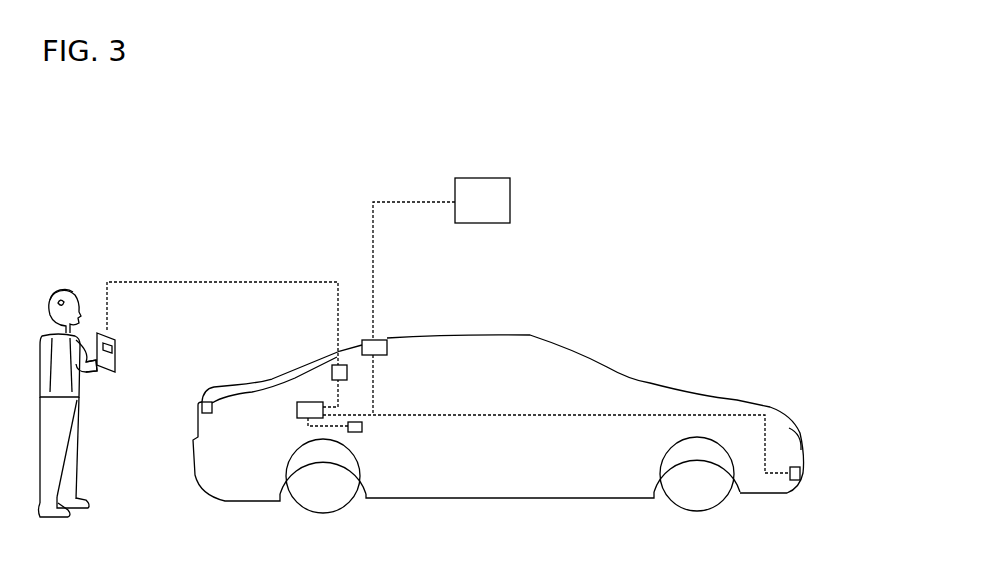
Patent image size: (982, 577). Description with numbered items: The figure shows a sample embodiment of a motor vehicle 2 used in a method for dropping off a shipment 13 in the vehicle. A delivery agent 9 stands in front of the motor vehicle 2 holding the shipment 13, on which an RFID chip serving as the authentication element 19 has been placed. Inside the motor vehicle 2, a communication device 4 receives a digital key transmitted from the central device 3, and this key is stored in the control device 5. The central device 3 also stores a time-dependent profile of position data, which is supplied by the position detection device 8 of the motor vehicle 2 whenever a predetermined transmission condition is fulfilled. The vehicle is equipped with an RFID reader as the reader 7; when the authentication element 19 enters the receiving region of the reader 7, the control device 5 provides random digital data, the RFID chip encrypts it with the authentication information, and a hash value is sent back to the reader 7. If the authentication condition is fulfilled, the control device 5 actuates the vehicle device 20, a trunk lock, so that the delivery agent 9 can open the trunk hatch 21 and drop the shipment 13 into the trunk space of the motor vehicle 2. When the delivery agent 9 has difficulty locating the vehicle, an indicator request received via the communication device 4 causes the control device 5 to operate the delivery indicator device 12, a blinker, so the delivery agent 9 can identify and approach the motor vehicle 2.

The motor vehicle 2 is at (636, 320).
The central device 3 is at (511, 194).
The communication device 4 is at (374, 346).
The control device 5 is at (298, 403).
The reader 7 is at (332, 368).
The position detection device 8 is at (363, 428).
The delivery agent 9 is at (71, 269).
The delivery indicator device 12 is at (796, 483).
The shipment 13 is at (116, 373).
The authentication element 19 is at (116, 333).
The vehicle device 20 is at (201, 404).
The trunk hatch 21 is at (226, 386).